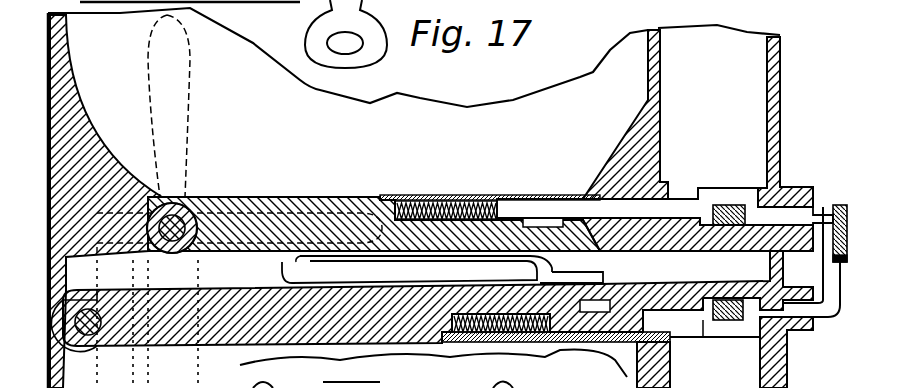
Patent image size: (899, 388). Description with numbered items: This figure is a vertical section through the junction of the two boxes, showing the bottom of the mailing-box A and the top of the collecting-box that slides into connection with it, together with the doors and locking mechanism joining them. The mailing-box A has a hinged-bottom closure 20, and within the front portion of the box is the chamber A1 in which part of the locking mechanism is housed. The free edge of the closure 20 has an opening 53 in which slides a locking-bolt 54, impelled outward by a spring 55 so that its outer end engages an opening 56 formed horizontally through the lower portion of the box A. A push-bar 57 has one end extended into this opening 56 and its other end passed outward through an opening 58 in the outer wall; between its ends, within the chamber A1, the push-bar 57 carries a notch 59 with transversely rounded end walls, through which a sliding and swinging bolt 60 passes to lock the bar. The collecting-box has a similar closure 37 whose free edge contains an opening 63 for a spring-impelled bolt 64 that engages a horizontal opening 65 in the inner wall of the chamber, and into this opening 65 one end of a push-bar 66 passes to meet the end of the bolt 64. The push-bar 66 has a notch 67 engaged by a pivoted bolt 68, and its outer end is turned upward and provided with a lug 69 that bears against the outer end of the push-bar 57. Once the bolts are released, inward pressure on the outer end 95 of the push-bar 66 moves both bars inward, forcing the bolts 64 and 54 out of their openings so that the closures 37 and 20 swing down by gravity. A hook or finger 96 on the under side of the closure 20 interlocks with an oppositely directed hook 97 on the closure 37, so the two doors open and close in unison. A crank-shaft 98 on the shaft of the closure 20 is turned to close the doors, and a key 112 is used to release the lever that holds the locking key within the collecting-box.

The hinged-bottom closure 20 is at (528, 199).
The closure 37 is at (247, 353).
The opening 53 is at (462, 199).
The locking-bolt 54 is at (551, 199).
The spring 55 is at (402, 197).
The opening 56 is at (586, 197).
The push-bar 57 is at (695, 188).
The opening 58 is at (800, 188).
The notch 59 is at (734, 203).
The sliding and swinging bolt 60 is at (725, 240).
The opening 63 is at (510, 343).
The spring-impelled bolt 64 is at (603, 334).
The horizontal opening 65 is at (667, 350).
The push-bar 66 is at (728, 339).
The notch 67 is at (760, 339).
The bolt 68 is at (745, 308).
The lug 69 is at (840, 205).
The outer end of push-bar 95 is at (837, 240).
The hook or finger 96 is at (280, 268).
The hook 97 is at (580, 275).
The crank-shaft 98 is at (184, 150).
The key 112 is at (336, 8).
The mailing-box A is at (609, 81).
The chamber A1 is at (715, 67).